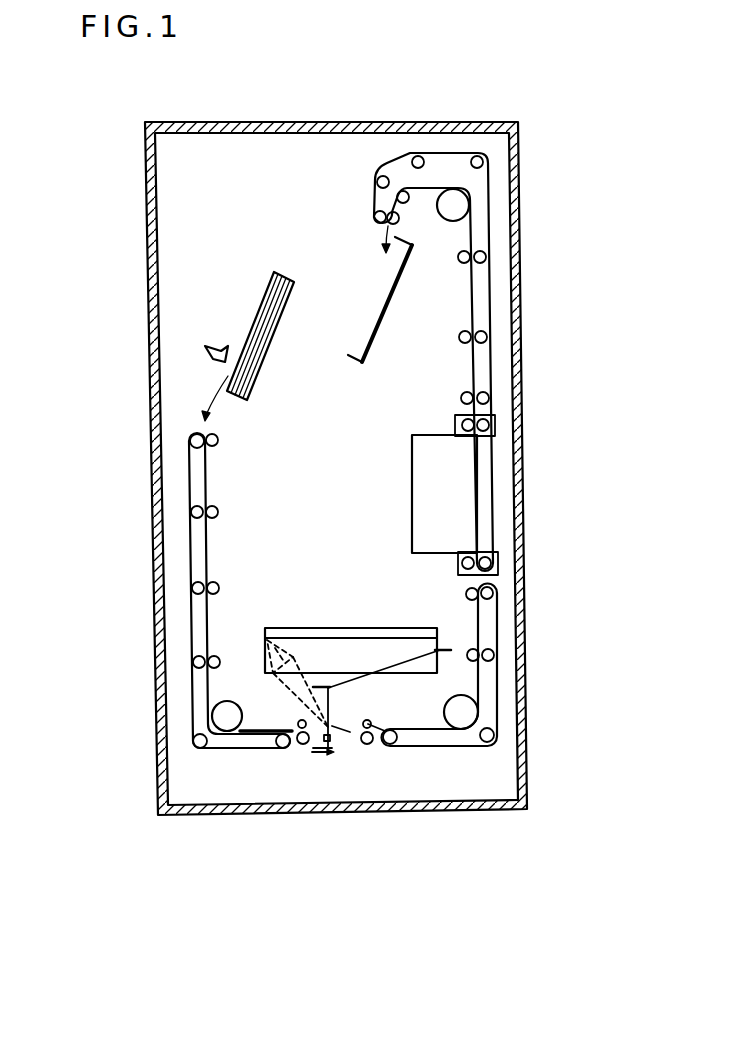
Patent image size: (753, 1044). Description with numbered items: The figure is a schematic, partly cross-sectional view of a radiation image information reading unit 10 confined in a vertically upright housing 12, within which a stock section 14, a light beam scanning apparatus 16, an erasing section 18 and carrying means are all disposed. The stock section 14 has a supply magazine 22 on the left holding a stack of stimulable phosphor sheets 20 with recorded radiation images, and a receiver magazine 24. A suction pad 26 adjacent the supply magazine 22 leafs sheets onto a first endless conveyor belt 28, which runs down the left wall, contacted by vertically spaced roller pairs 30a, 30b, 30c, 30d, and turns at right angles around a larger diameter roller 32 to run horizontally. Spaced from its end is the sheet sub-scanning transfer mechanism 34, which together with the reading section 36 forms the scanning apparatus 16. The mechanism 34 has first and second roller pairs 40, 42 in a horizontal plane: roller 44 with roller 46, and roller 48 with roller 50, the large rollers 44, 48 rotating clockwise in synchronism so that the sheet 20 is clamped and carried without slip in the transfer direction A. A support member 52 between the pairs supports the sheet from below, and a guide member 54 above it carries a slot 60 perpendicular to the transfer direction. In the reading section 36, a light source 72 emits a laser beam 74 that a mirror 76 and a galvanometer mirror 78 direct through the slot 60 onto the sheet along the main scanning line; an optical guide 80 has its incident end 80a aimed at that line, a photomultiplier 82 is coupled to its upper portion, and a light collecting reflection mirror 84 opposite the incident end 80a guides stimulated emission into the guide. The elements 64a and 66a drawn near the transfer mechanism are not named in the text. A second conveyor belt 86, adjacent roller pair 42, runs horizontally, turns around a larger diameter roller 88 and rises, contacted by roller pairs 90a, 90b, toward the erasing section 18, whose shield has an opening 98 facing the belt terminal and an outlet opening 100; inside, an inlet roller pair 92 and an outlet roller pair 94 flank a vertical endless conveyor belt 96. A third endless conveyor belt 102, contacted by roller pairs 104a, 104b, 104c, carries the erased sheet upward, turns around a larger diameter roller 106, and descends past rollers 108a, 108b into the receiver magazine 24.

The radiation image information reading unit 10 is at (340, 78).
The housing 12 is at (228, 178).
The stock section 14 is at (176, 347).
The light beam scanning apparatus 16 is at (337, 893).
The erasing section 18 is at (497, 483).
The stimulable phosphor sheet 20 is at (265, 305).
The supply magazine 22 is at (284, 273).
The receiver magazine 24 is at (357, 366).
The suction pad 26 is at (217, 345).
The first endless conveyor belt 28 is at (188, 465).
The roller pair 30a is at (203, 437).
The roller pair 30b is at (193, 508).
The roller pair 30c is at (193, 588).
The roller pair 30d is at (193, 660).
The larger diameter roller 32 is at (213, 714).
The sheet sub-scanning transfer mechanism 34 is at (290, 918).
The reading section 36 is at (295, 627).
The first roller pair 40 is at (260, 770).
The second roller pair 42 is at (358, 746).
The roller 44 is at (277, 760).
The roller 46 is at (280, 752).
The roller 48 is at (375, 744).
The roller 50 is at (378, 747).
The support member 52 is at (320, 752).
The guide member 54 is at (352, 722).
The slot 60 is at (368, 755).
The guide 64a is at (376, 763).
The pinch roller 66a is at (340, 752).
The light source 72 is at (378, 645).
The laser beam 74 is at (425, 645).
The mirror 76 is at (440, 647).
The galvanometer mirror 78 is at (322, 683).
The optical guide 80 is at (322, 722).
The incident end 80a is at (325, 736).
The photomultiplier 82 is at (265, 636).
The light collecting reflection mirror 84 is at (332, 724).
The second conveyor belt 86 is at (499, 640).
The larger diameter roller 88 is at (499, 722).
The roller pair 90a is at (499, 672).
The roller pair 90b is at (499, 603).
The inlet roller pair 92 is at (497, 556).
The outlet roller pair 94 is at (492, 427).
The endless conveyor belt 96 is at (493, 530).
The opening 98 is at (478, 574).
The opening 100 is at (489, 398).
The third endless conveyor belt 102 is at (491, 287).
The roller pair 104a is at (482, 393).
The roller pair 104b is at (482, 332).
The roller pair 104c is at (470, 255).
The larger diameter roller 106 is at (457, 204).
The roller 108a is at (385, 214).
The roller 108b is at (375, 215).
The sheet transfer direction A is at (321, 737).